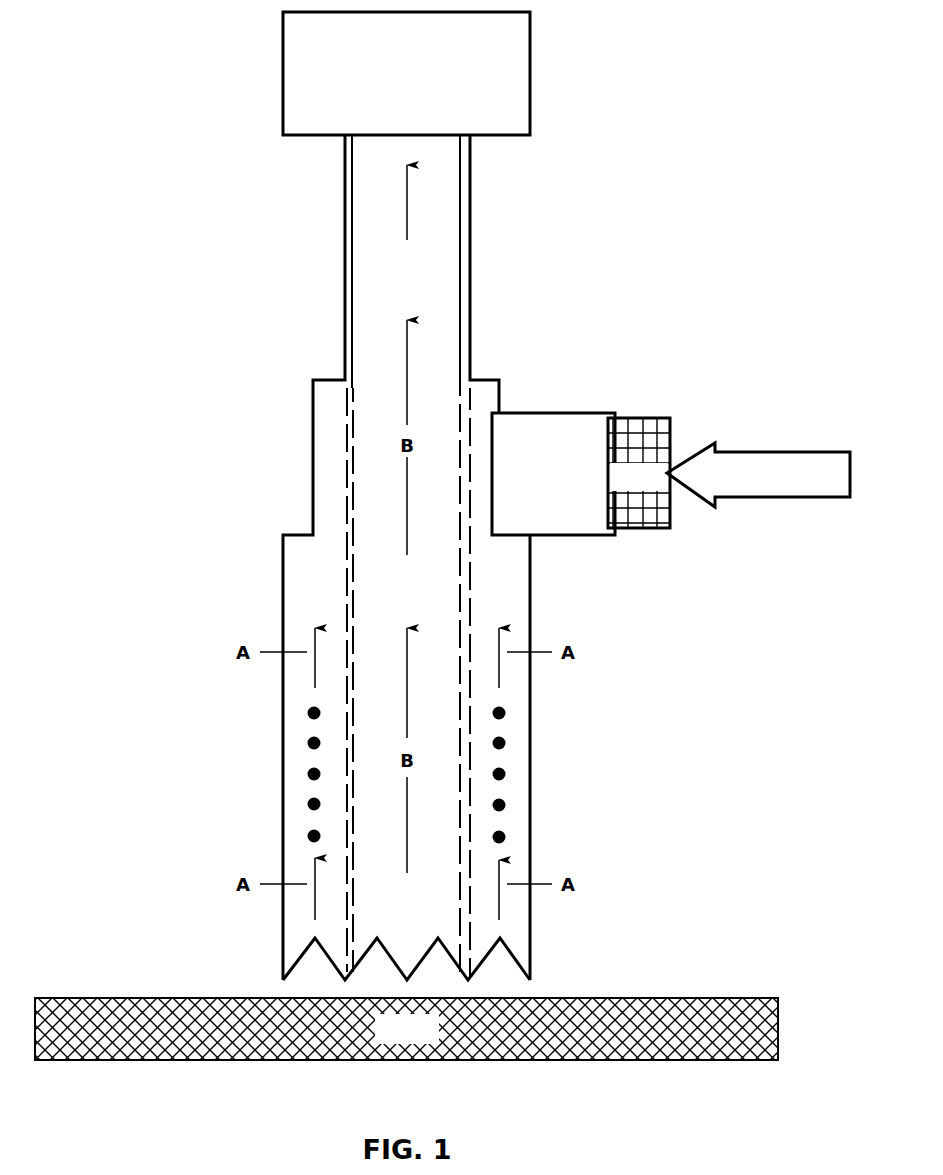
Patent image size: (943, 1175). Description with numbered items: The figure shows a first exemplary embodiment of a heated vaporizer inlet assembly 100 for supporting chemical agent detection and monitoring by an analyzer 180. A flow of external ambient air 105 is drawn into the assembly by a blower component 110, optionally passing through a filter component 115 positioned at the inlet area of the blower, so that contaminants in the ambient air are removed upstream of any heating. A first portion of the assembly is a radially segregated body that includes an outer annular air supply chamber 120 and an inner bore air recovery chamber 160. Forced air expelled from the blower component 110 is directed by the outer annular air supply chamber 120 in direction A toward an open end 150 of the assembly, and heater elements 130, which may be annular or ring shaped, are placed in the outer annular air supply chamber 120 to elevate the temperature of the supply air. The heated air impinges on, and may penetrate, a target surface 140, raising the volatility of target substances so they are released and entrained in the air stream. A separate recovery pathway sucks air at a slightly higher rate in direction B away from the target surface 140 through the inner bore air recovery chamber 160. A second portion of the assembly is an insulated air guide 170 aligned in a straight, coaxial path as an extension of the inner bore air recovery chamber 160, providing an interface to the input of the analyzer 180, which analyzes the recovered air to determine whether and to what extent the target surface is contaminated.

The heated vaporizer inlet assembly 100 is at (236, 83).
The external ambient air 105 is at (758, 475).
The blower component 110 is at (553, 474).
The filter component 115 is at (639, 473).
The outer annular air supply chamber 120 is at (407, 753).
The heater elements 130 is at (314, 836).
The target surface 140 is at (406, 1029).
The open end 150 is at (406, 945).
The inner bore air recovery chamber 160 is at (407, 730).
The insulated air guide 170 is at (407, 360).
The analyzer 180 is at (406, 73).